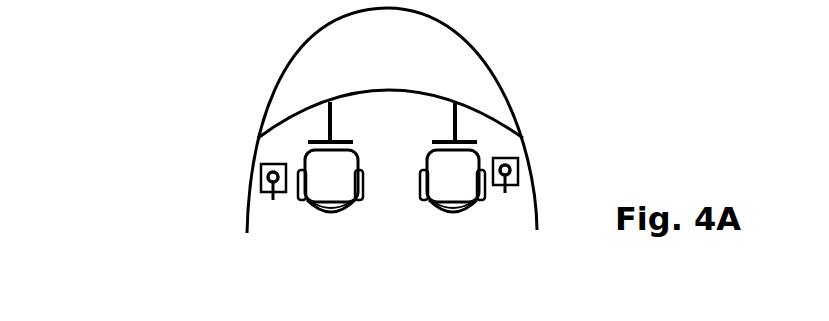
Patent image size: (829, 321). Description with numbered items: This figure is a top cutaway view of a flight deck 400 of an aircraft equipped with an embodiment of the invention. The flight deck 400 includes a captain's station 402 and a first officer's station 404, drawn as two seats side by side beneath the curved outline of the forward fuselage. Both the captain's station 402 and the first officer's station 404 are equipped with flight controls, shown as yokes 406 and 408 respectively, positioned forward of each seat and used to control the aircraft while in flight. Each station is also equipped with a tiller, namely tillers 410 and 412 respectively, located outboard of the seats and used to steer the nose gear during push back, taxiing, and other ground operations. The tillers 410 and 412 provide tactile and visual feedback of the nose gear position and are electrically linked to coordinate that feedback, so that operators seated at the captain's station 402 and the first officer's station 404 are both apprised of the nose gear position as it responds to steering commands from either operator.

The flight deck 400 is at (98, 162).
The captain's station 402 is at (327, 210).
The first officer's station 404 is at (472, 210).
The yoke 406 is at (313, 137).
The yoke 408 is at (463, 138).
The tiller 410 is at (260, 176).
The tiller 412 is at (520, 167).